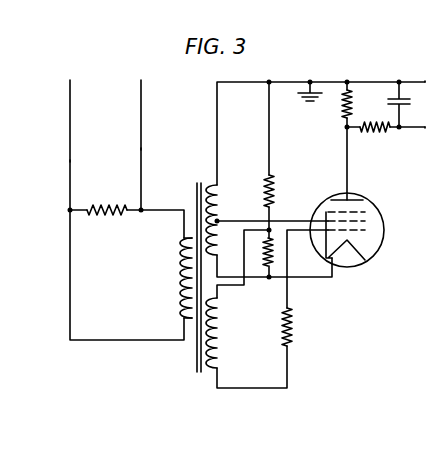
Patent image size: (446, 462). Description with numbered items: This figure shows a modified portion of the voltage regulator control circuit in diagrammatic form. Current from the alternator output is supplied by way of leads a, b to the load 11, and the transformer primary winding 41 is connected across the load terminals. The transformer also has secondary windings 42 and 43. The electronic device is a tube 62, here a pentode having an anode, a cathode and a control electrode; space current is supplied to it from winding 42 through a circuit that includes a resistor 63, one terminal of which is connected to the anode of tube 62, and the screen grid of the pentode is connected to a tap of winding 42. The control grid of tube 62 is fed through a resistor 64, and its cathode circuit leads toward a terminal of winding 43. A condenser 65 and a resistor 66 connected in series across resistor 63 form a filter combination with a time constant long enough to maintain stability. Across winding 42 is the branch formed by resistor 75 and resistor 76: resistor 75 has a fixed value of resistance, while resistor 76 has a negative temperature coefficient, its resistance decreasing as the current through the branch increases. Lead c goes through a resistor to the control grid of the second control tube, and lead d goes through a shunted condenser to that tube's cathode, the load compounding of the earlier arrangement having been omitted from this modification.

The load 11 is at (113, 219).
The primary winding 41 is at (178, 272).
The secondary winding 42 is at (220, 214).
The secondary winding 43 is at (220, 331).
The electronic device 62 is at (369, 201).
The resistor 63 is at (343, 99).
The resistor 64 is at (292, 323).
The condenser 65 is at (410, 101).
The resistor 66 is at (374, 133).
The resistor 75 is at (275, 193).
The resistor 76 is at (264, 246).
The lead a is at (70, 163).
The lead b is at (141, 149).
The lead c is at (425, 82).
The lead d is at (425, 127).